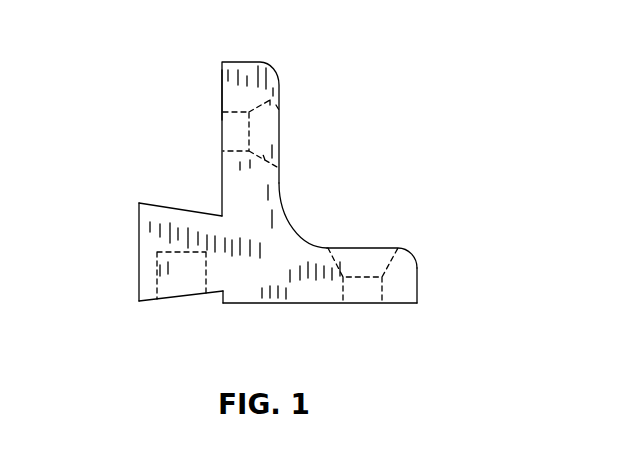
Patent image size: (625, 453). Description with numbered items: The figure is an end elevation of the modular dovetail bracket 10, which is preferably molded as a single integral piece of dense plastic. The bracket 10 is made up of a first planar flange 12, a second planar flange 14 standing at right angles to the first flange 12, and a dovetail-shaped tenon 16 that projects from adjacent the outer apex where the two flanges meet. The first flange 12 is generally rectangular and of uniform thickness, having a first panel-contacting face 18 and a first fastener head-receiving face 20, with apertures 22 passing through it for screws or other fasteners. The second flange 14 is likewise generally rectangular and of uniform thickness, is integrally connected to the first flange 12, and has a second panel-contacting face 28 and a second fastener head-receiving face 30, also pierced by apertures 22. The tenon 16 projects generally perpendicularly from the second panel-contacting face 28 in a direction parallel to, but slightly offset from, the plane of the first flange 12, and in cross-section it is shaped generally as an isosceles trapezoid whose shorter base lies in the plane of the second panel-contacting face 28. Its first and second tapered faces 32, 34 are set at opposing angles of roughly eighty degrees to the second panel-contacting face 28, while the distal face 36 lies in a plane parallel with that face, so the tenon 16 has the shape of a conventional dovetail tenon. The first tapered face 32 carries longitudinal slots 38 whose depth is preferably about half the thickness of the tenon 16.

The modular dovetail bracket 10 is at (452, 80).
The first planar flange 12 is at (428, 270).
The second planar flange 14 is at (215, 62).
The dovetail-shaped tenon 16 is at (125, 218).
The first panel-contacting face 18 is at (402, 303).
The first fastener head-receiving face 20 is at (377, 247).
The apertures 22 is at (288, 125).
The second panel-contacting face 28 is at (222, 97).
The second fastener head-receiving face 30 is at (284, 185).
The first tapered face 32 is at (143, 306).
The second tapered face 34 is at (178, 205).
The distal face 36 is at (139, 258).
The longitudinal slots 38 is at (208, 268).